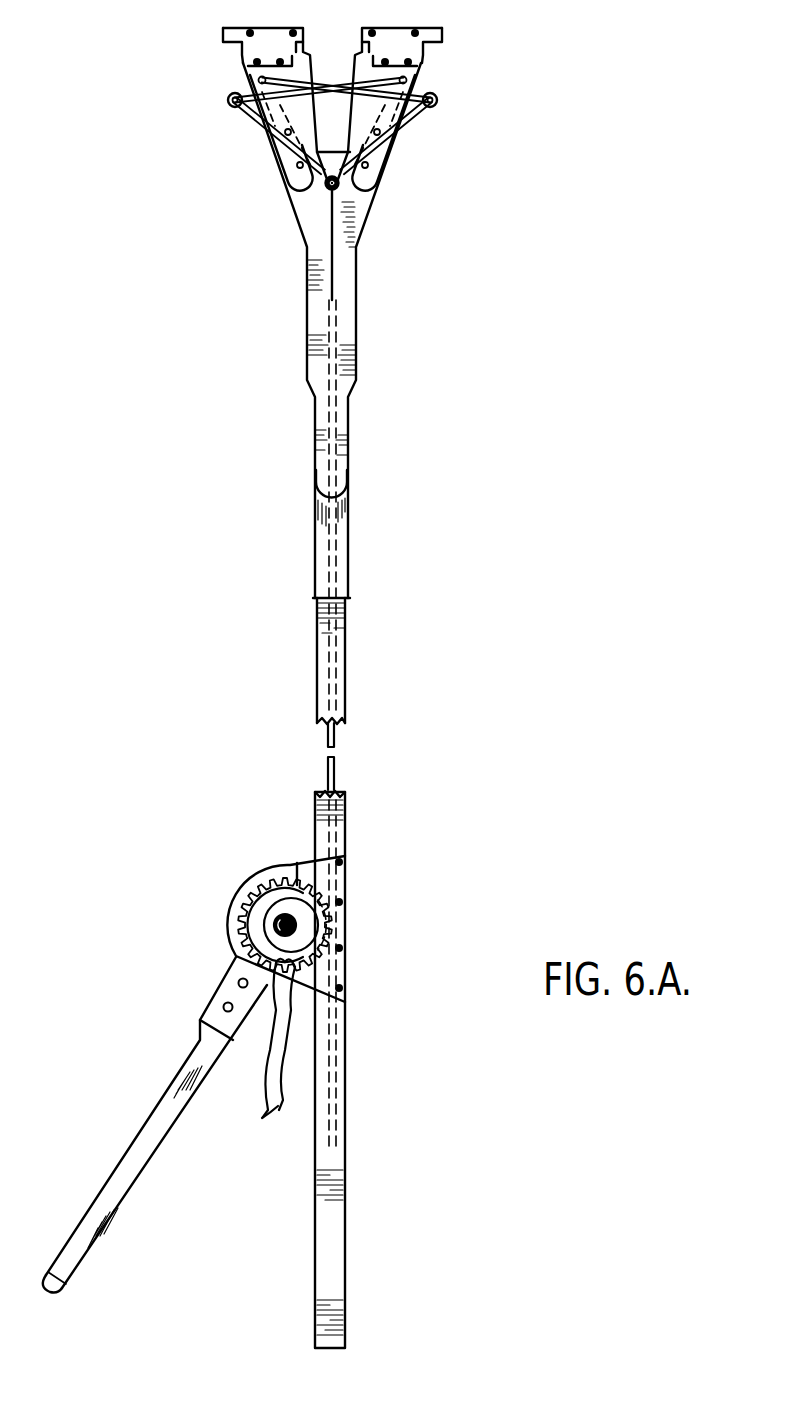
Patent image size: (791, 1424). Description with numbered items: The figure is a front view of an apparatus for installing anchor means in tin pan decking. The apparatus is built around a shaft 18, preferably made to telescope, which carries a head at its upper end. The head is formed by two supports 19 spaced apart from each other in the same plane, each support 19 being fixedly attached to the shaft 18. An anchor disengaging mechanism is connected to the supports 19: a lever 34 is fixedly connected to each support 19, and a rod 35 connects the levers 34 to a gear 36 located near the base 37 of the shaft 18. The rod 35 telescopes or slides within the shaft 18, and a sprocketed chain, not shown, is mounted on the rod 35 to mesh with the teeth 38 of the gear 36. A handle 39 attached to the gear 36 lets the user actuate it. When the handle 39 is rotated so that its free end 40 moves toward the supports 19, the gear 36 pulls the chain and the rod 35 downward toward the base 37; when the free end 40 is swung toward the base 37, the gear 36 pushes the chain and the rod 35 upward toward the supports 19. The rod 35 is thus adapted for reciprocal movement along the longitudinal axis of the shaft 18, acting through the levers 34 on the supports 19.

The shaft 18 is at (338, 692).
The supports 19 is at (283, 174).
The lever 34 is at (229, 105).
The rod 35 is at (334, 745).
The gear 36 is at (253, 900).
The base 37 is at (333, 1268).
The teeth 38 is at (267, 1058).
The handle 39 is at (157, 1125).
The free end 40 is at (54, 1288).